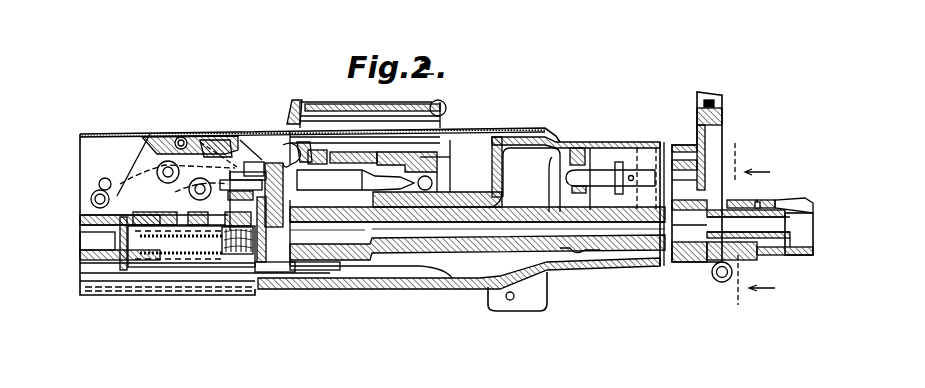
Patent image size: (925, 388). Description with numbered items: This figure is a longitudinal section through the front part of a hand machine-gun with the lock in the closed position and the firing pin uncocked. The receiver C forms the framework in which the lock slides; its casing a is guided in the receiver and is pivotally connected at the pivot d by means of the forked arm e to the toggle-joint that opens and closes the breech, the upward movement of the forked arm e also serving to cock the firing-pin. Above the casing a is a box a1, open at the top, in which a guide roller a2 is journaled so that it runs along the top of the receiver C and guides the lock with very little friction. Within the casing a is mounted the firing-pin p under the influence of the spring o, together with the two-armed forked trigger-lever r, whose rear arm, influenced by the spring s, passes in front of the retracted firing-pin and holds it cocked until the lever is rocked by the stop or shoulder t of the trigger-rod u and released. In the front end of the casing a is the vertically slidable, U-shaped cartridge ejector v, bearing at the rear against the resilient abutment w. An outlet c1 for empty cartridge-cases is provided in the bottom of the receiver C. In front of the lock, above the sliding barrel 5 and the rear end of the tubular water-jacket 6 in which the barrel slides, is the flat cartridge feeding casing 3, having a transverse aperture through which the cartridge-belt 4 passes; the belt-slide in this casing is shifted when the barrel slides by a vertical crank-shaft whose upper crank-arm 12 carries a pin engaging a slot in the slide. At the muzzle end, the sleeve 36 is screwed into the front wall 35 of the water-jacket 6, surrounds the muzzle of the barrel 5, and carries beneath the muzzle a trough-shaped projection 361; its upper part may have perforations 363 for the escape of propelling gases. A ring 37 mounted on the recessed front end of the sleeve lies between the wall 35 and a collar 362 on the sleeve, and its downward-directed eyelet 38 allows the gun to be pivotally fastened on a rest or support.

The receiver C is at (93, 152).
The cartridge-belt 4 is at (152, 210).
The casing of the lock a is at (203, 153).
The box a1 is at (195, 137).
The guide roller a2 is at (180, 136).
The sleeve 36 is at (123, 188).
The forked arm e is at (98, 258).
The spring o is at (152, 252).
The outlet c1 is at (190, 240).
The spring s is at (215, 260).
The pivot d is at (238, 258).
The cartridge ejector v is at (268, 160).
The resilient abutment w is at (254, 174).
The firing-pin p is at (280, 264).
The trigger-rod u is at (286, 292).
The trigger-lever r is at (293, 291).
The stop or shoulder t is at (350, 296).
The collar 362 is at (292, 160).
The trough-shaped projection 361 is at (322, 130).
The upper crank-arm 12 is at (355, 148).
The cartridge feeding casing 3 is at (440, 158).
The water-jacket 6 is at (578, 201).
The barrel 5 is at (813, 201).
The front wall of the water-jacket 35 is at (727, 180).
The ring 37 is at (738, 188).
The perforations 363 is at (760, 192).
The eyelet 38 is at (717, 274).